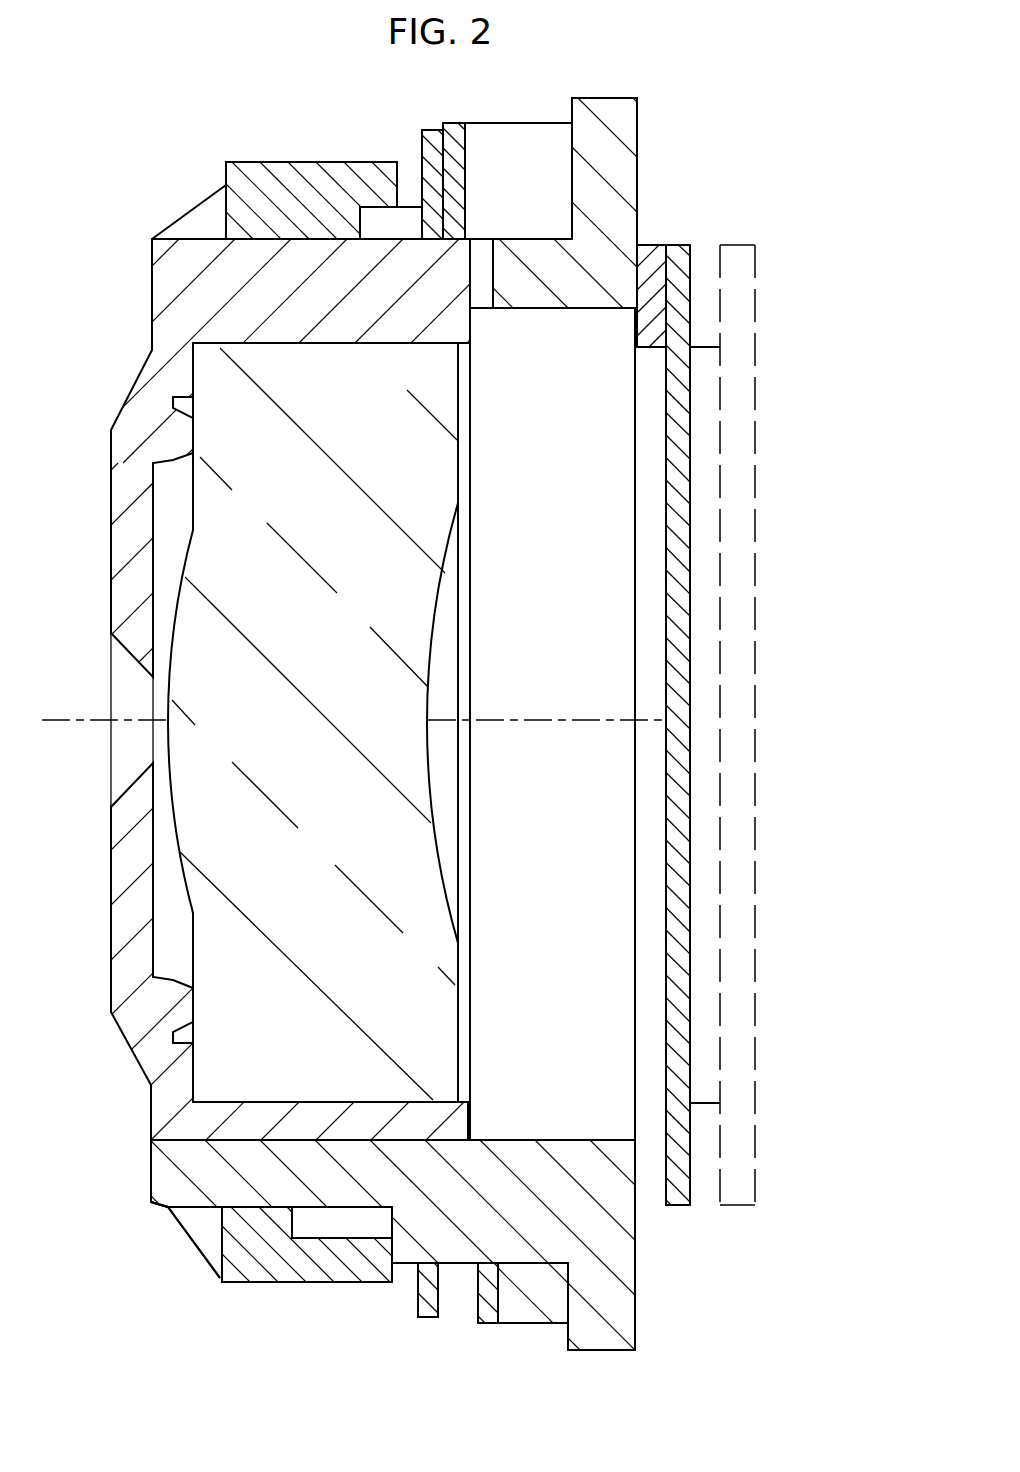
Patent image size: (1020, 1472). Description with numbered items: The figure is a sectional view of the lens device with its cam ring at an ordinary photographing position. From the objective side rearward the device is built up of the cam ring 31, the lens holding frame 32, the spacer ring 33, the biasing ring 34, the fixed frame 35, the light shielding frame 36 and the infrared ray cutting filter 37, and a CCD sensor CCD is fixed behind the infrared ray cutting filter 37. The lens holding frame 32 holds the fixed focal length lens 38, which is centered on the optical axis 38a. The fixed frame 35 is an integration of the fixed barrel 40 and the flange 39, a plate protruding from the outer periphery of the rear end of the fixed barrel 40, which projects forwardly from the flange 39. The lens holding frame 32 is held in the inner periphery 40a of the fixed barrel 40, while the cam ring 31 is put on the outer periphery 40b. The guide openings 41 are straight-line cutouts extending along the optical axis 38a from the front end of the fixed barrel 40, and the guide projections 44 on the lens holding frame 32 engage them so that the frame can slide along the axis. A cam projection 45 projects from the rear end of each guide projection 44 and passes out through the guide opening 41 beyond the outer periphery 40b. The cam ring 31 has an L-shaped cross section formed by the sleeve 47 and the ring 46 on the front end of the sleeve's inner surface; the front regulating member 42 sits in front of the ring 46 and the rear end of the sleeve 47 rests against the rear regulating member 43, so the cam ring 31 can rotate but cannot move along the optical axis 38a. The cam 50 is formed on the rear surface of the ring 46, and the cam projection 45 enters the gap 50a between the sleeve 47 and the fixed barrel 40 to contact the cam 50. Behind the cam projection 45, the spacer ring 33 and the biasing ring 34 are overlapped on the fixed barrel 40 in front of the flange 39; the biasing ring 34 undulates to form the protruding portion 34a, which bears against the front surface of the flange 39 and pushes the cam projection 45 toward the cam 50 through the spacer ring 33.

The cam ring 31 is at (218, 157).
The lens holding frame 32 is at (144, 332).
The spacer ring 33 is at (432, 142).
The biasing ring 34 is at (463, 133).
The protruding portion 34a is at (463, 173).
The fixed frame 35 is at (640, 1272).
The light shielding frame 36 is at (648, 246).
The infrared ray cutting filter 37 is at (678, 247).
The fixed focal length lens 38 is at (420, 617).
The optical axis 38a is at (543, 724).
The flange 39 is at (633, 110).
The fixed barrel 40 is at (162, 1175).
The inner periphery 40a is at (563, 1140).
The outer periphery 40b is at (170, 1223).
The guide opening 41 is at (483, 290).
The front regulating member 42 is at (207, 212).
The rear regulating member 43 is at (448, 1247).
The guide projection 44 is at (207, 253).
The cam projection 45 is at (400, 213).
The ring 46 is at (240, 1250).
The sleeve 47 is at (348, 1272).
The cam 50 is at (357, 217).
The gap 50a is at (353, 1218).
The CCD sensor CCD is at (754, 389).